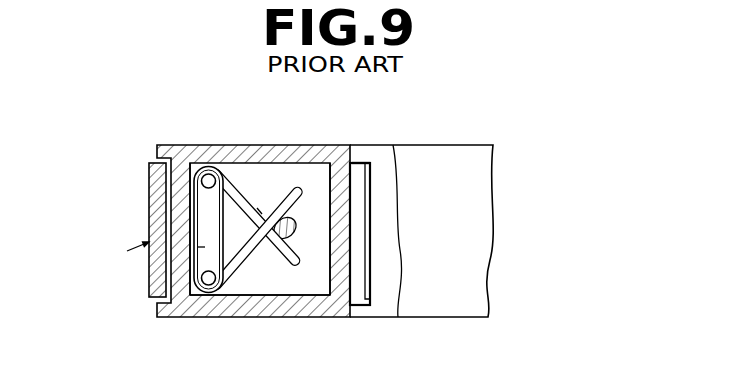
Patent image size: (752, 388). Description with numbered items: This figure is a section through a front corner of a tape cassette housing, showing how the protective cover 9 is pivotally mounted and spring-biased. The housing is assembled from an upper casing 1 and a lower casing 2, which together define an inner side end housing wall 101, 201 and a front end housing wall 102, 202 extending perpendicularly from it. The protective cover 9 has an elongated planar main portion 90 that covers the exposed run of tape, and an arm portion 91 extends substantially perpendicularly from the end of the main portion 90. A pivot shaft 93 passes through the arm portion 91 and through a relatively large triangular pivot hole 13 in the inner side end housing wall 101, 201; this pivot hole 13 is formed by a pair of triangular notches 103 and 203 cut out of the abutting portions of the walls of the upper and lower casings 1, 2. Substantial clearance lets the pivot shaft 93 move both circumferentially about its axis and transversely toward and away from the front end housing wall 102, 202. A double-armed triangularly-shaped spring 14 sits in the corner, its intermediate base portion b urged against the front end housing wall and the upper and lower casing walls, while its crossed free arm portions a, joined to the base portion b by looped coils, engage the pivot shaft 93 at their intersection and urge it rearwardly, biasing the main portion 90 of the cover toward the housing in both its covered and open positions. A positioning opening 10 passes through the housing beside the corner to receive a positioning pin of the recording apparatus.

The upper casing 1 is at (323, 152).
The lower casing 2 is at (258, 232).
The protective cover 9 is at (136, 260).
The positioning opening 10 is at (378, 308).
The pivot hole 13 is at (231, 213).
The double-armed triangularly-shaped spring 14 is at (232, 172).
The main portion 90 is at (149, 178).
The arm portion 91 is at (363, 292).
The pivot shaft 93 is at (355, 166).
The inner side end housing wall 101 is at (336, 227).
The front end housing wall 102 is at (181, 200).
The triangular notch 103 is at (257, 208).
The inner side end housing wall 201 is at (341, 263).
The front end housing wall 202 is at (175, 273).
The triangular notch 203 is at (272, 248).
The free arm portion a is at (235, 285).
The base portion b is at (210, 249).